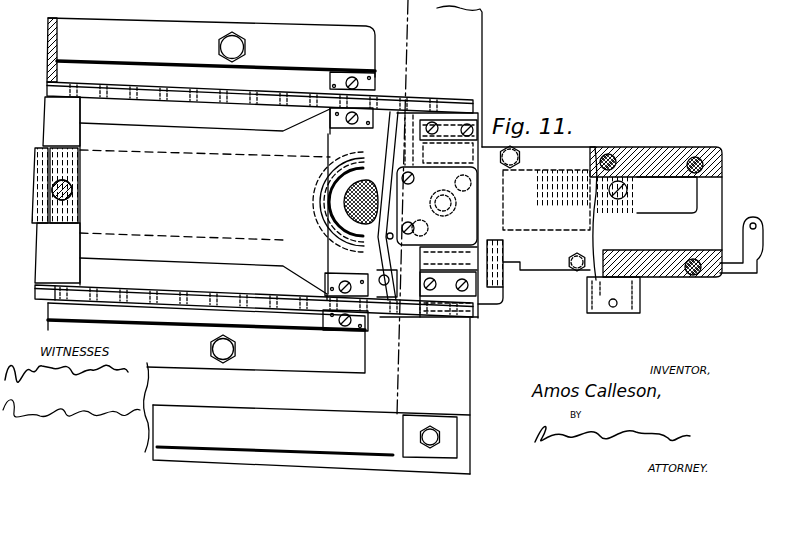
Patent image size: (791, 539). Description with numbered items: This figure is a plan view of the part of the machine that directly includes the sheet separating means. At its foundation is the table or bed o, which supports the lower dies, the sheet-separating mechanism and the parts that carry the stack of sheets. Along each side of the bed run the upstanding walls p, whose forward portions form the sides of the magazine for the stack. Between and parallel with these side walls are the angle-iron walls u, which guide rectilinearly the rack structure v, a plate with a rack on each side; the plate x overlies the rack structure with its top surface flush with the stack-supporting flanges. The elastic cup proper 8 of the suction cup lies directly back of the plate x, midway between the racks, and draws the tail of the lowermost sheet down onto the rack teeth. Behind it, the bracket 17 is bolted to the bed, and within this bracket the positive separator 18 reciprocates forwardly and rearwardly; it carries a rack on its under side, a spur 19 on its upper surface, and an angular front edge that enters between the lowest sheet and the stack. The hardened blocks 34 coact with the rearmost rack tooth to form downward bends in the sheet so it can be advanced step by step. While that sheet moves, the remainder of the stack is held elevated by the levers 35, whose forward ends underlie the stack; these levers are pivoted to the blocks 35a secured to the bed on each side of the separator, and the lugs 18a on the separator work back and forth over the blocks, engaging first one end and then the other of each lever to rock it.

The elastic cup proper 8 is at (350, 207).
The bracket 17 is at (645, 158).
The positive separator 18 is at (385, 160).
The lugs 18a is at (408, 107).
The spur 19 is at (388, 234).
The hardened blocks 34 is at (367, 117).
The levers 35 is at (472, 128).
The blocks 35a is at (480, 124).
The plate x is at (186, 198).
The rack structure v is at (57, 253).
The angle-iron walls u is at (270, 363).
The upstanding walls p is at (323, 418).
The table or bed O is at (465, 386).